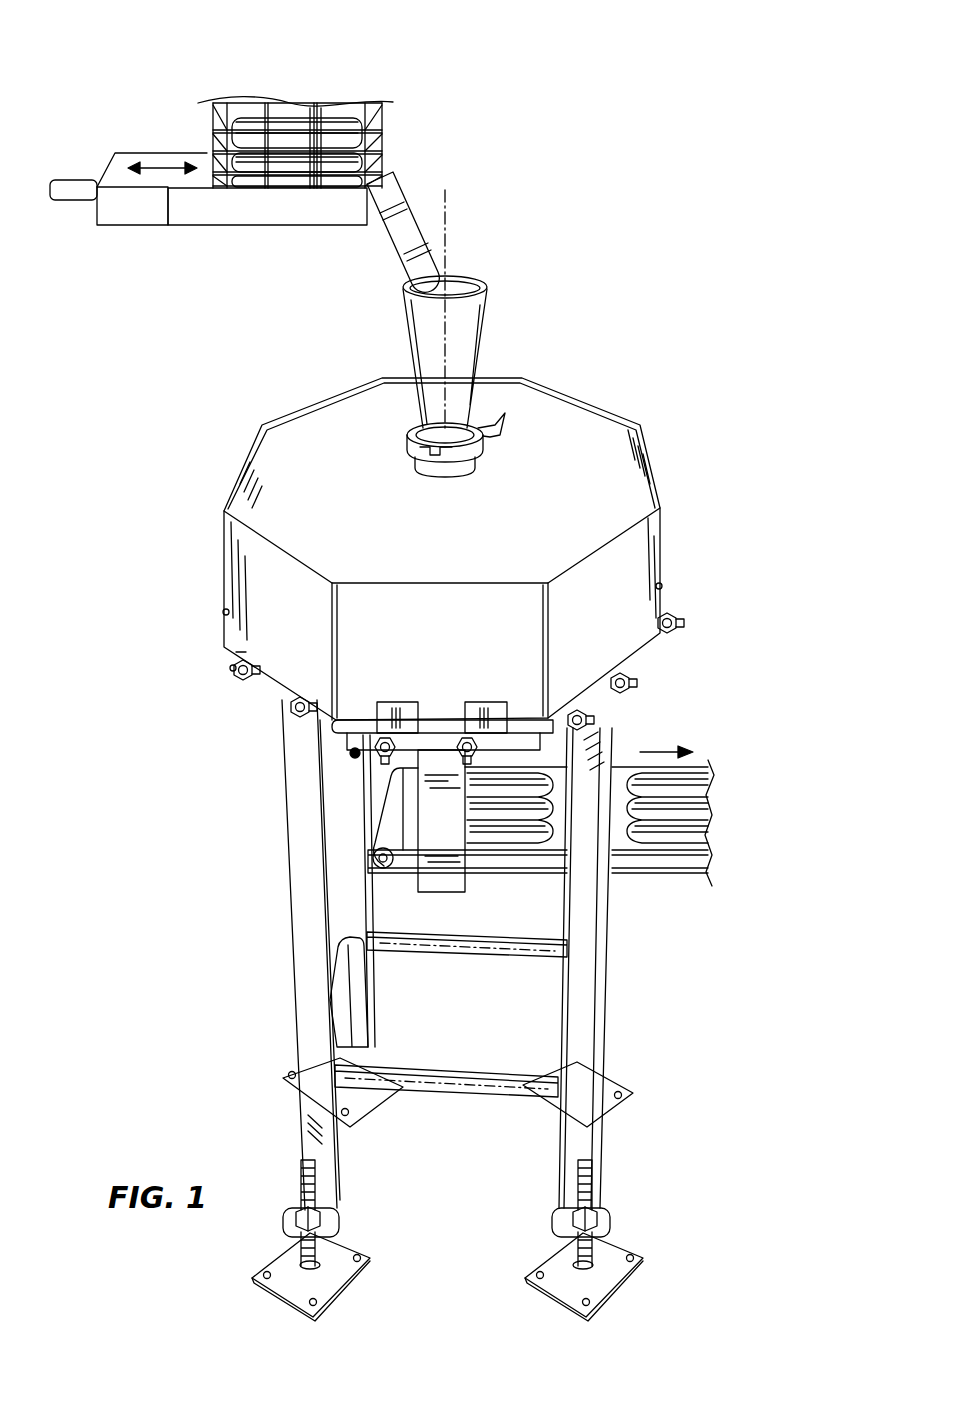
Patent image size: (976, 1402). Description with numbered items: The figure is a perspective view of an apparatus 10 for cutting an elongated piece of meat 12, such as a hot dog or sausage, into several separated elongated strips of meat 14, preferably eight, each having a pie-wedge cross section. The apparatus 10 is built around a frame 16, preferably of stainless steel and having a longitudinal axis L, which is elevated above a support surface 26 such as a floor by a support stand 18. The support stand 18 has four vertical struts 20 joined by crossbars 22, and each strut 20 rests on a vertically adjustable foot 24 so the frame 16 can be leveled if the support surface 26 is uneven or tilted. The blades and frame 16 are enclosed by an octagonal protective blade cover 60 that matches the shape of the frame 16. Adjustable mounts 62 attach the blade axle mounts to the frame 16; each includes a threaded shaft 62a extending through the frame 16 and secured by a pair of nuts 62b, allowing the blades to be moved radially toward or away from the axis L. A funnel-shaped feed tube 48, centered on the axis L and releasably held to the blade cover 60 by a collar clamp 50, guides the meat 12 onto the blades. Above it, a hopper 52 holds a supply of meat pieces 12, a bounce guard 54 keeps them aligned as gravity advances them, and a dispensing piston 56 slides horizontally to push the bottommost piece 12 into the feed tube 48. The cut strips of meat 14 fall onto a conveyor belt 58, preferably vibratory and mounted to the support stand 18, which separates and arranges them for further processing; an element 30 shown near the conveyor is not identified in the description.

The apparatus for cutting elongated meat 10 is at (614, 180).
The elongated piece of meat 12 is at (353, 140).
The strips of meat 14 is at (510, 818).
The frame 16 is at (640, 657).
The support stand 18 is at (297, 822).
The vertical struts 20 is at (338, 867).
The crossbars 22 is at (338, 973).
The vertically adjustable feet 24 is at (602, 1107).
The support surface 26 is at (684, 1197).
The guide plate 30 is at (441, 883).
The feed tube 48 is at (482, 337).
The collar clamp 50 is at (470, 453).
The hopper 52 is at (264, 103).
The bounce guard 54 is at (313, 115).
The dispensing piston 56 is at (130, 215).
The conveyor belt 58 is at (403, 805).
The blade cover 60 is at (568, 415).
The adjustable mounts 62 is at (680, 625).
The threaded shaft 62a is at (232, 668).
The nuts 62b is at (236, 652).